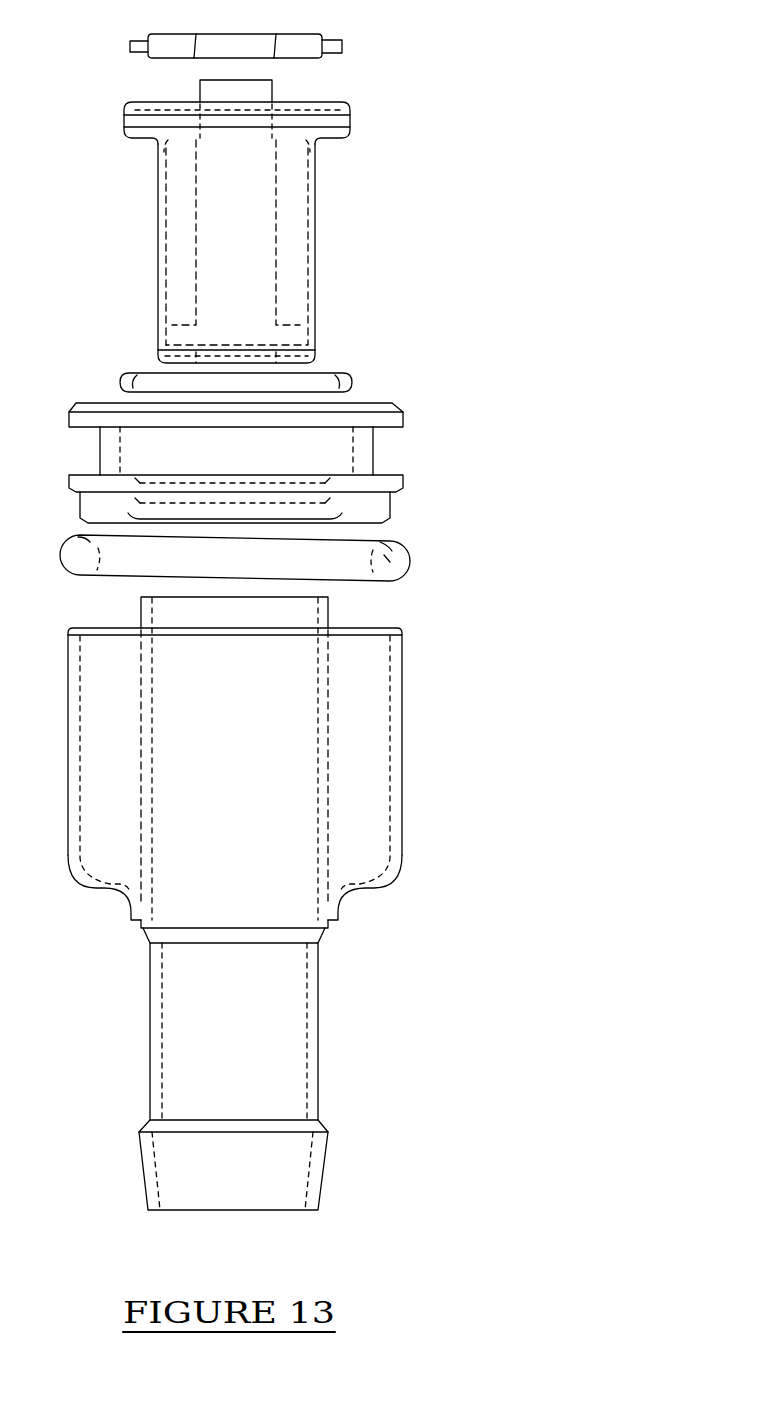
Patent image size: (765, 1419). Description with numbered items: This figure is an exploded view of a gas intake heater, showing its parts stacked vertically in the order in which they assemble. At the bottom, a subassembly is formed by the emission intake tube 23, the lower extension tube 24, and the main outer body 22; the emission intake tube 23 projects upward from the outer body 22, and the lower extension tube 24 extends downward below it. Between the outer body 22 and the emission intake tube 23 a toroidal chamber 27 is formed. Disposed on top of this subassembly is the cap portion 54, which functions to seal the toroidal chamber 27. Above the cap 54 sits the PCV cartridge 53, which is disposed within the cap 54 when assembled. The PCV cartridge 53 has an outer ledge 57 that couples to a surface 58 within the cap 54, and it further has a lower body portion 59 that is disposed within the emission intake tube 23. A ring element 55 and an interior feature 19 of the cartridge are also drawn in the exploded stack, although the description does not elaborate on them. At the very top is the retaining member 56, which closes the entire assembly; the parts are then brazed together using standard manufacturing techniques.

The retaining member 56 is at (342, 47).
The outer ledge 57 is at (337, 142).
The PCV cartridge 53 is at (316, 228).
The lower body portion 59 is at (157, 298).
The channel 19 is at (308, 300).
The cap portion 54 is at (392, 408).
The surface 58 is at (330, 475).
The o-ring 55 is at (393, 560).
The emission intake tube 23 is at (325, 614).
The toroidal chamber 27 is at (364, 699).
The main outer body 22 is at (402, 772).
The lower extension tube 24 is at (318, 1077).